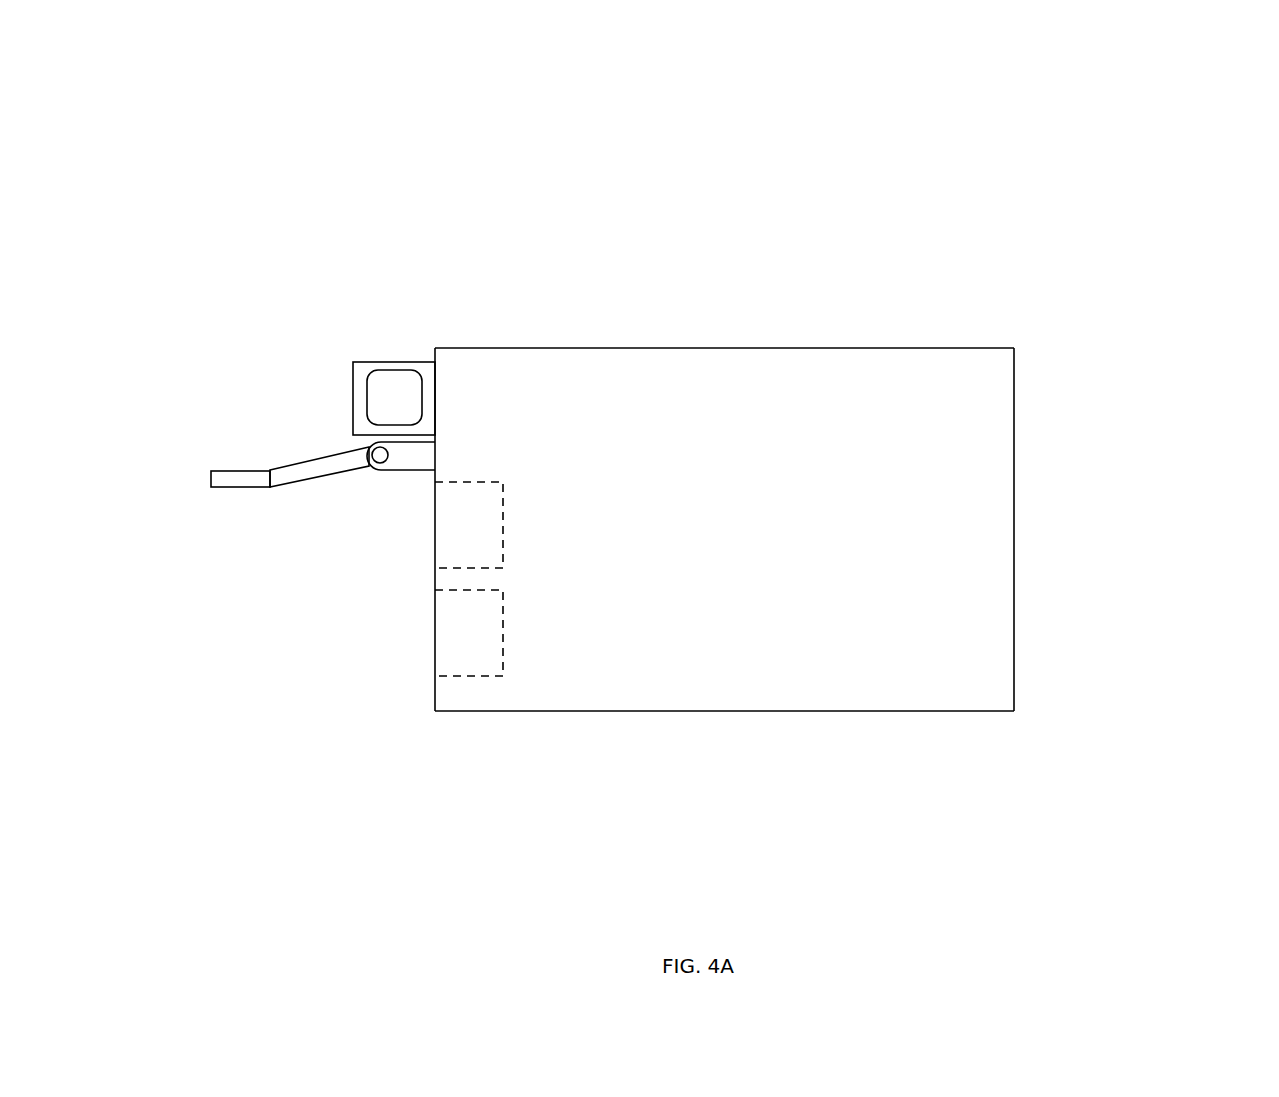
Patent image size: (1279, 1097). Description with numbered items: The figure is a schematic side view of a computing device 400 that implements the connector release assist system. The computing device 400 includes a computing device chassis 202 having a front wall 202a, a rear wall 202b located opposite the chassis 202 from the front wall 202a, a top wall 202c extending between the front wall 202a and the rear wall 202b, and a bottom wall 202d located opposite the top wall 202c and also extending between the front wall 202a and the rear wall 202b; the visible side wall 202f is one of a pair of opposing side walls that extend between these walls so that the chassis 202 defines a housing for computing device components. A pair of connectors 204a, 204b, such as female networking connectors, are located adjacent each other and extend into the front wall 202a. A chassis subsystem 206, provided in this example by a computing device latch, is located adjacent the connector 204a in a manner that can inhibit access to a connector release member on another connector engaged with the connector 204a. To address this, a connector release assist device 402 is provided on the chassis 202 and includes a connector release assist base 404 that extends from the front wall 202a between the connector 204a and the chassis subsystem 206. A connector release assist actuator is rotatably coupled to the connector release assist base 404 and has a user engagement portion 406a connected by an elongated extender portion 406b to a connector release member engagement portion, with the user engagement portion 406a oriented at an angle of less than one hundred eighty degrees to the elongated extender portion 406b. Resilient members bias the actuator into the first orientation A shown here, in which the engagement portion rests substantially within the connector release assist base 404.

The computing device 400 is at (1162, 135).
The connector release assist device 402 is at (191, 446).
The connector release assist base 404 is at (420, 457).
The user engagement portion 406a is at (240, 470).
The elongated extender portion 406b is at (322, 458).
The computing device chassis 202 is at (716, 525).
The front wall 202a is at (435, 690).
The rear wall 202b is at (1015, 530).
The top wall 202c is at (725, 347).
The bottom wall 202d is at (723, 712).
The side wall 202f is at (738, 541).
The connector 204a is at (503, 527).
The connector 204b is at (503, 630).
The chassis subsystem 206 is at (353, 398).
The first orientation A is at (171, 513).